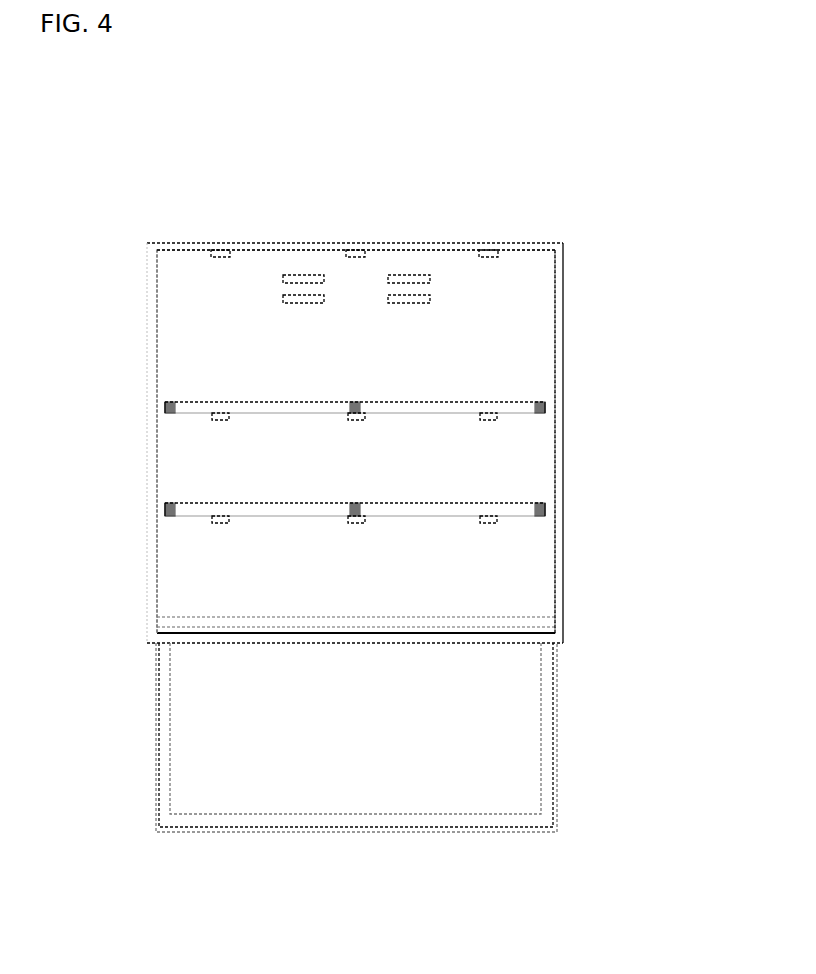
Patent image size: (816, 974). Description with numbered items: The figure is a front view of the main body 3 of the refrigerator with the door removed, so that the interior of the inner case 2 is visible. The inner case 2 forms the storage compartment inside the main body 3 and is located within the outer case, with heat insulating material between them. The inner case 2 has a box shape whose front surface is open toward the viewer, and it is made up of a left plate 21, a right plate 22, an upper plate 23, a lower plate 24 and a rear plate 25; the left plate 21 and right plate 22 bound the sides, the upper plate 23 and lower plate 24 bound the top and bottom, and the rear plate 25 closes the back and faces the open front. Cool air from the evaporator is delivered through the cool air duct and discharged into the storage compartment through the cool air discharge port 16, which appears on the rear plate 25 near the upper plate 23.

The inner case 2 is at (152, 250).
The main body 3 is at (520, 225).
The cool air discharge port 16 is at (300, 276).
The left plate 21 is at (555, 268).
The right plate 22 is at (157, 268).
The upper plate 23 is at (457, 250).
The lower plate 24 is at (530, 833).
The rear plate 25 is at (487, 278).